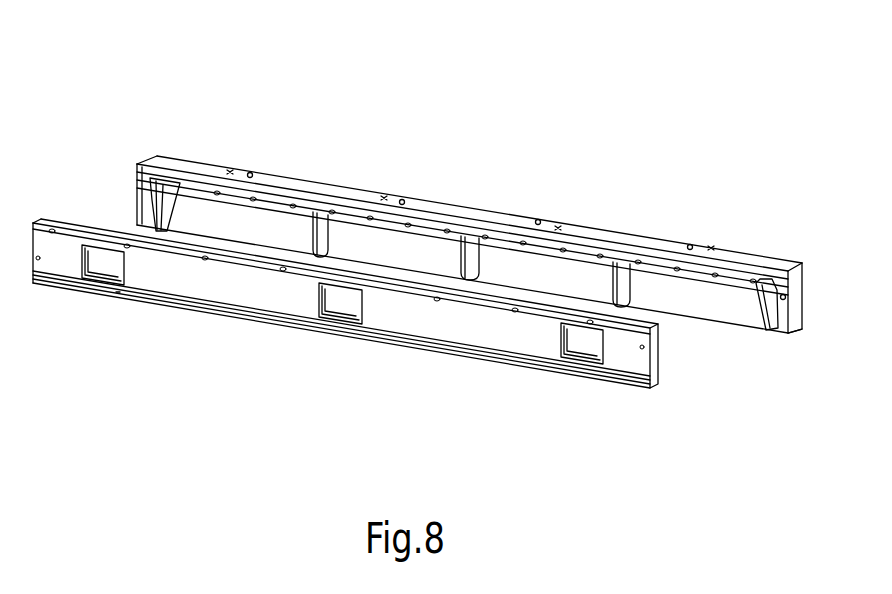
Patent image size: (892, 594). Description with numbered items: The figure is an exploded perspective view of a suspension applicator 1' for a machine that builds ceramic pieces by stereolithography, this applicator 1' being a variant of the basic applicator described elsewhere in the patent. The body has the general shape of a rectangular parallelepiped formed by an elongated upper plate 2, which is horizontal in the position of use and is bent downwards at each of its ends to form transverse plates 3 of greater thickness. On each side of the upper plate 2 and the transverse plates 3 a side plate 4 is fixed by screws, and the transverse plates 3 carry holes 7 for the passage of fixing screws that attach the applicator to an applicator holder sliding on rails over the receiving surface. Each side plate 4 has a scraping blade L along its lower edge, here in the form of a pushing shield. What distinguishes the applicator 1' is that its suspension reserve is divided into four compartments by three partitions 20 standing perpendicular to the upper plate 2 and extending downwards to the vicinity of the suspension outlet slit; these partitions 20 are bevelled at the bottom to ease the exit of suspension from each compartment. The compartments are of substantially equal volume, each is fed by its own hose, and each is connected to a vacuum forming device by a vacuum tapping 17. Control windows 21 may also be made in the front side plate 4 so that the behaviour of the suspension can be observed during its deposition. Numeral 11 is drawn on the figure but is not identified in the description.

The applicator 1' is at (417, 204).
The upper plate 2 is at (187, 160).
The transverse plates 3 is at (137, 210).
The side plate 4 is at (385, 323).
The holes 7 is at (137, 193).
The opening 11 is at (250, 175).
The vacuum tapping 17 is at (230, 172).
The partitions 20 is at (312, 226).
The control windows 21 is at (92, 287).
The scraping blade L is at (118, 292).